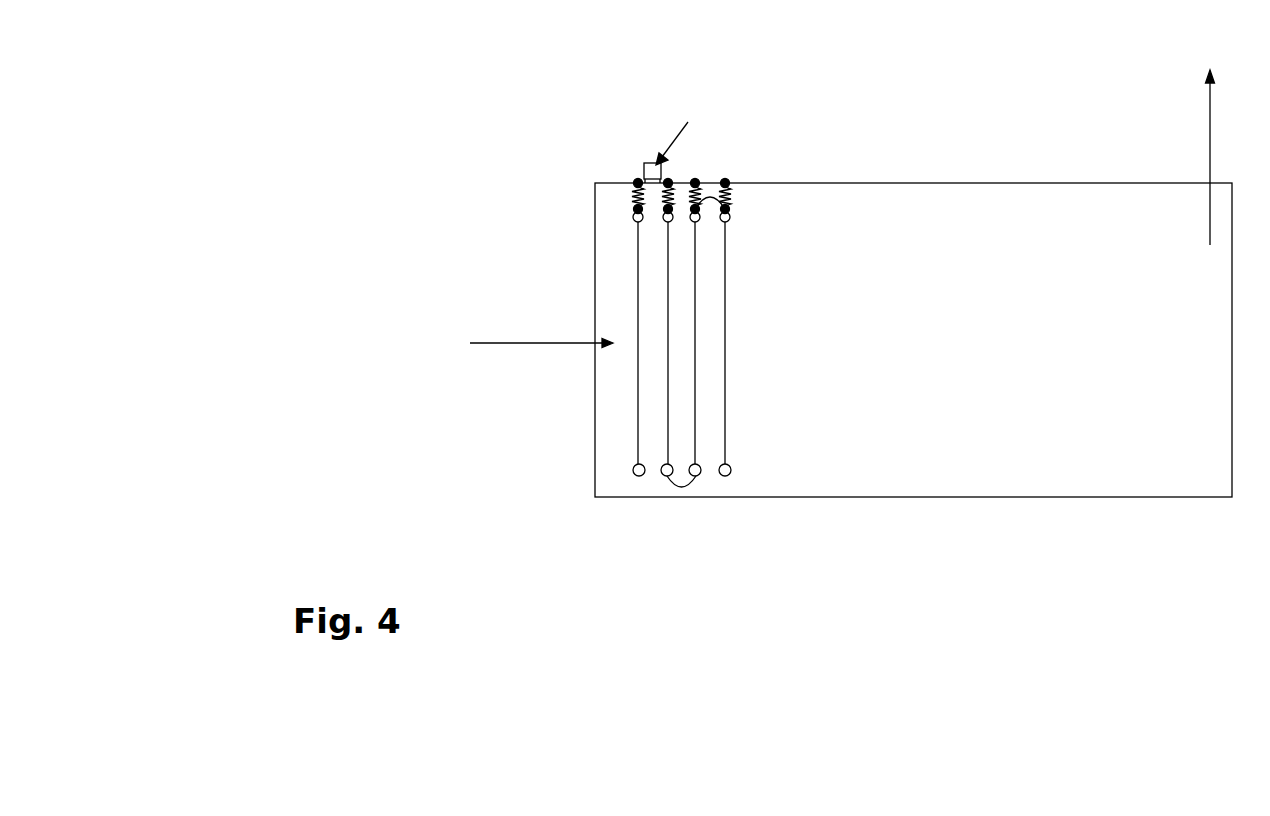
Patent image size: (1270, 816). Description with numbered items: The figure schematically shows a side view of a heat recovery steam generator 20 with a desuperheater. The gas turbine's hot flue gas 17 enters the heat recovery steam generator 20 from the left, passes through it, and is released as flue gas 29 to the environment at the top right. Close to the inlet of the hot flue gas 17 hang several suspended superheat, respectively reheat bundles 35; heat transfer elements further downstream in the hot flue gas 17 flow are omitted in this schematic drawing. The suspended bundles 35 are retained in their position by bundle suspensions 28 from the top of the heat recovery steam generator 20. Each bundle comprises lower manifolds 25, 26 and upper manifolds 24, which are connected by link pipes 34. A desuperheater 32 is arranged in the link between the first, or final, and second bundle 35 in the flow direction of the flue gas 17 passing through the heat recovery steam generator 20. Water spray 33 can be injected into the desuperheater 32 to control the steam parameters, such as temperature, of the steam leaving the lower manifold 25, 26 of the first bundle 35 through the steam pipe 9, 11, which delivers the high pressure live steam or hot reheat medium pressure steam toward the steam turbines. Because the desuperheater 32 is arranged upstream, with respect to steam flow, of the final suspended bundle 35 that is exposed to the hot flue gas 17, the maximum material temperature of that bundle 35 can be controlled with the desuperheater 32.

The high pressure live steam pipe 9 is at (672, 511).
The medium pressure hot reheat steam pipe 11 is at (641, 476).
The hot flue gas 17 is at (541, 325).
The heat recovery steam generator 20 is at (1057, 328).
The upper manifolds 24 is at (637, 213).
The lower manifold 25 is at (777, 429).
The lower manifold 26 is at (729, 464).
The bundle suspensions 28 is at (728, 189).
The flue gas 29 is at (1210, 140).
The desuperheater 32 is at (645, 162).
The water spray 33 is at (690, 126).
The link pipes 34 is at (712, 200).
The suspended superheat or reheat bundles 35 is at (731, 262).